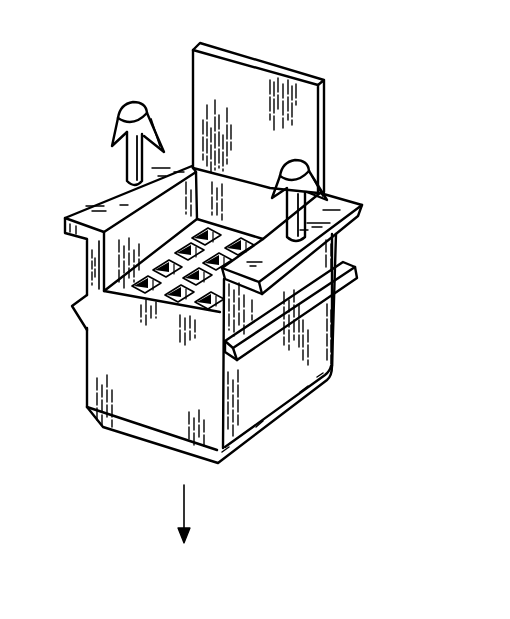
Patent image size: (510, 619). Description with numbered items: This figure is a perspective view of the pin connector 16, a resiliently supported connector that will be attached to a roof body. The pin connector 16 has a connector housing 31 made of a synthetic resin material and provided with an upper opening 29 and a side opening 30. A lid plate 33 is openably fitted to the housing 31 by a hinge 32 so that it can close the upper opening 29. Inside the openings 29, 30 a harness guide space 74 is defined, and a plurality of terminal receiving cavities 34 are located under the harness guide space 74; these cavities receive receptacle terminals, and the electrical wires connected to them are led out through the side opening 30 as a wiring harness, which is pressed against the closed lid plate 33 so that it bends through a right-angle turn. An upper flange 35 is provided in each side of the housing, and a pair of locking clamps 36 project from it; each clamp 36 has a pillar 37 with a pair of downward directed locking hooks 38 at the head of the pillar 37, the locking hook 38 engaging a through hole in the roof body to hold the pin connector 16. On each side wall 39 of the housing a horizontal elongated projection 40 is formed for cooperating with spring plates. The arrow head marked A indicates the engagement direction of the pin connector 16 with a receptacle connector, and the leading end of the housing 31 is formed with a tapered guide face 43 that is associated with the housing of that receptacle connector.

The pin connector 16 is at (331, 397).
The upper opening 29 is at (115, 203).
The side opening 30 is at (100, 263).
The connector housing 31 is at (341, 318).
The hinge 32 is at (187, 157).
The lid plate 33 is at (318, 82).
The terminal receiving cavities 34 is at (137, 282).
The upper flange 35 is at (350, 202).
The locking clamp 36 is at (133, 102).
The pillar 37 is at (137, 165).
The locking hook 38 is at (115, 134).
The side wall 39 is at (317, 343).
The horizontal elongated projection 40 is at (353, 264).
The tapered guide face 43 is at (282, 413).
The harness guide space 74 is at (147, 222).